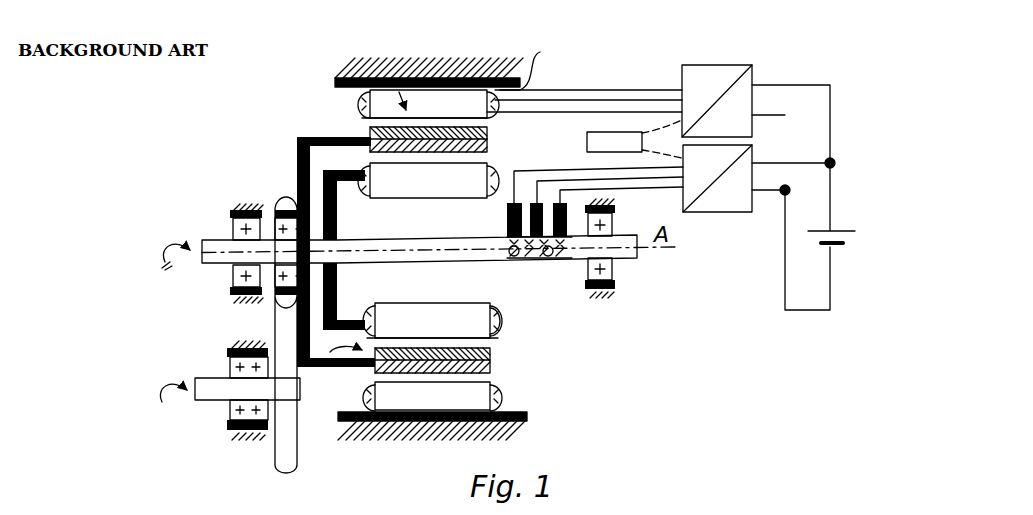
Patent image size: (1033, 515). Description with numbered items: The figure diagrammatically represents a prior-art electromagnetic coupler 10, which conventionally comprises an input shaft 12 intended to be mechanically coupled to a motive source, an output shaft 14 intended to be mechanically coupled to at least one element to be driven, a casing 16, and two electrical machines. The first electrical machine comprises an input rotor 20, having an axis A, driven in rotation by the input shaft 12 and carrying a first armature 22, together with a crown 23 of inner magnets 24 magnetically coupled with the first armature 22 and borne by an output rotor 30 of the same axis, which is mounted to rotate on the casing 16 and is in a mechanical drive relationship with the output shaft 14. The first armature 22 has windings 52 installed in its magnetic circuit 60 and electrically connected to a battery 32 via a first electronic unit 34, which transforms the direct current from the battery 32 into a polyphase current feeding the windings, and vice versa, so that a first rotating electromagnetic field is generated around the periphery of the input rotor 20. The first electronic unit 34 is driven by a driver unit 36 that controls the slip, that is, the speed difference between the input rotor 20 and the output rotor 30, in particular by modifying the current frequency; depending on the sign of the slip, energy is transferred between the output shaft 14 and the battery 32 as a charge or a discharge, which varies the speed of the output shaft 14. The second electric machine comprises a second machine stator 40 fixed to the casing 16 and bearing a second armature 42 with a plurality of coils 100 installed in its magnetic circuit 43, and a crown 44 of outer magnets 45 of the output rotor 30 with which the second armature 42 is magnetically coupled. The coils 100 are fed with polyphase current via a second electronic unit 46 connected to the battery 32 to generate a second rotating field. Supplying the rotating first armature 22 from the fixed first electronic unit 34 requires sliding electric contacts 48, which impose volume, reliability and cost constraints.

The electromagnetic coupler 10 is at (584, 43).
The input shaft 12 is at (212, 264).
The output shaft 14 is at (210, 400).
The casing 16 is at (446, 60).
The input rotor 20 is at (340, 213).
The first armature 22 is at (508, 335).
The crown of inner magnets 23 is at (318, 368).
The inner magnets 24 is at (492, 356).
The output rotor 30 is at (297, 159).
The battery 32 is at (849, 246).
The first electronic unit 34 is at (728, 214).
The driver unit 36 is at (612, 140).
The second machine stator 40 is at (396, 62).
The second armature 42 is at (508, 381).
The magnetic circuit 43 is at (532, 62).
The crown of outer magnets 44 is at (496, 130).
The outer magnets 45 is at (370, 128).
The second electronic unit 46 is at (708, 75).
The sliding electric contacts 48 is at (570, 236).
The windings 52 is at (511, 312).
The magnetic circuit 60 is at (403, 304).
The coils 100 is at (500, 100).